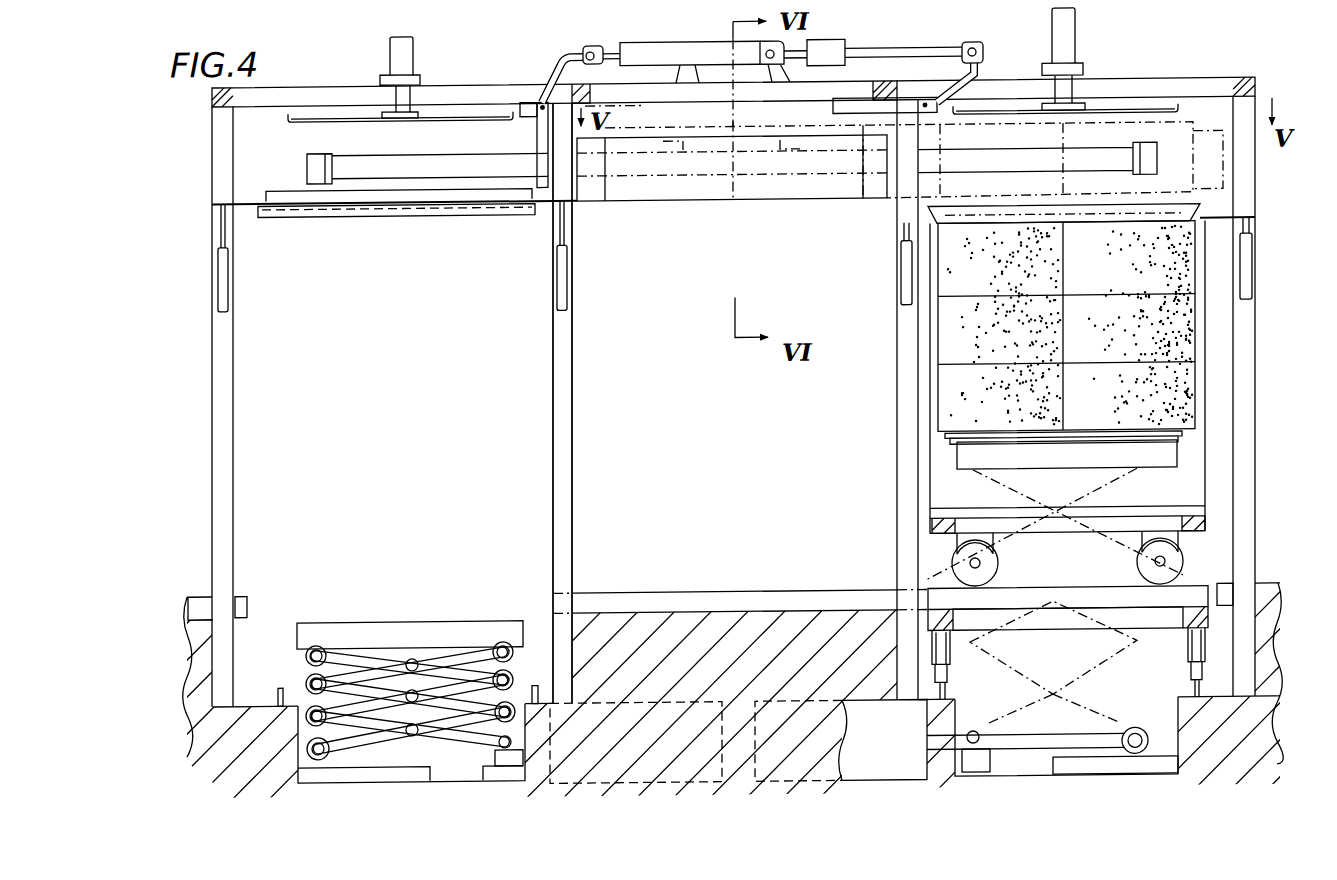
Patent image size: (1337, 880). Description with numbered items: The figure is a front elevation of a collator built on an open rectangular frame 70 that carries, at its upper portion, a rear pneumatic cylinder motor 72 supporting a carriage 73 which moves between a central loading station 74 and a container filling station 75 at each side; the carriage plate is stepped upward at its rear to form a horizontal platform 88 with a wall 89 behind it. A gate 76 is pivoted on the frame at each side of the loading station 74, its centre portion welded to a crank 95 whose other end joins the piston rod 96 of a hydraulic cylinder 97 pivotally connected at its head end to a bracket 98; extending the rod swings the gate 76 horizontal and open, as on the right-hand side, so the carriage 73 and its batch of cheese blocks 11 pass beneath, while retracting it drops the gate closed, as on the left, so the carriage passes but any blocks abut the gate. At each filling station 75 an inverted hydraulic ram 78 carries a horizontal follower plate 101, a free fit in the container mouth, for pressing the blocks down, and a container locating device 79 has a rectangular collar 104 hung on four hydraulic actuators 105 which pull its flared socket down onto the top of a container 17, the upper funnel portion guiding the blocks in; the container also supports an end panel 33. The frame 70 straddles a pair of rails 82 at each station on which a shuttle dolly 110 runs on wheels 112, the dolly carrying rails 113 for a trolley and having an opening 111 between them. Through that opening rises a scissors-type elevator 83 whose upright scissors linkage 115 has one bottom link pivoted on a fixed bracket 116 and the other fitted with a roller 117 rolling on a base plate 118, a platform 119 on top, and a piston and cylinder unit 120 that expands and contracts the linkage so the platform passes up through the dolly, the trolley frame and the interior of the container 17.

The cheese blocks 11 is at (958, 341).
The container 17 is at (958, 395).
The end panel 33 is at (1190, 443).
The frame 70 is at (572, 371).
The rear pneumatic cylinder motor 72 is at (362, 174).
The carriage 73 is at (823, 207).
The loading station 74 is at (699, 209).
The container filling station 75 is at (278, 356).
The gate 76 is at (540, 136).
The hydraulic ram 78 is at (416, 63).
The container locating device 79 is at (264, 218).
The rails 82 is at (262, 699).
The scissors-type elevator 83 is at (270, 643).
The platform 88 is at (742, 195).
The wall 89 is at (657, 188).
The crank 95 is at (560, 66).
The piston rod 96 is at (606, 50).
The hydraulic cylinder 97 is at (675, 47).
The bracket 98 is at (788, 65).
The follower plate 101 is at (316, 118).
The rectangular collar 104 is at (393, 220).
The hydraulic actuator 105 is at (229, 294).
The shuttle dolly 110 is at (1160, 628).
The opening 111 is at (1236, 607).
The wheels 112 is at (1203, 683).
The rails 113 is at (1150, 584).
The scissors linkage 115 is at (305, 732).
The fixed bracket 116 is at (502, 764).
The roller 117 is at (312, 760).
The base plate 118 is at (332, 776).
The platform 119 is at (1155, 470).
The piston and cylinder unit 120 is at (630, 707).